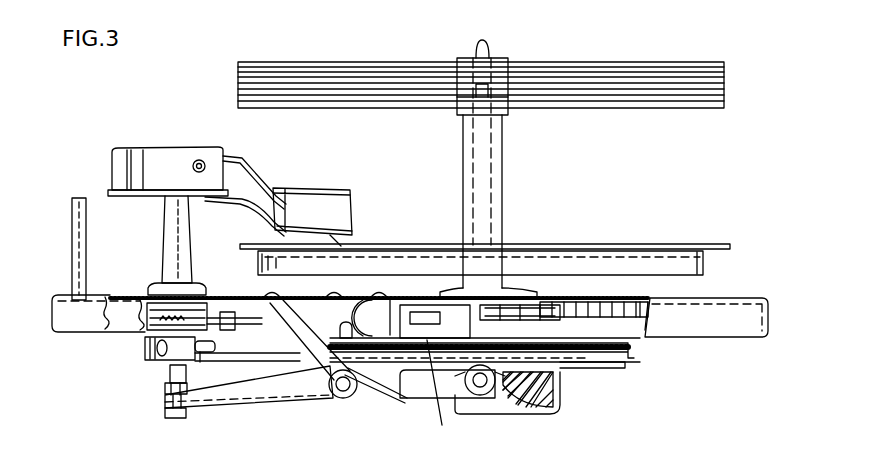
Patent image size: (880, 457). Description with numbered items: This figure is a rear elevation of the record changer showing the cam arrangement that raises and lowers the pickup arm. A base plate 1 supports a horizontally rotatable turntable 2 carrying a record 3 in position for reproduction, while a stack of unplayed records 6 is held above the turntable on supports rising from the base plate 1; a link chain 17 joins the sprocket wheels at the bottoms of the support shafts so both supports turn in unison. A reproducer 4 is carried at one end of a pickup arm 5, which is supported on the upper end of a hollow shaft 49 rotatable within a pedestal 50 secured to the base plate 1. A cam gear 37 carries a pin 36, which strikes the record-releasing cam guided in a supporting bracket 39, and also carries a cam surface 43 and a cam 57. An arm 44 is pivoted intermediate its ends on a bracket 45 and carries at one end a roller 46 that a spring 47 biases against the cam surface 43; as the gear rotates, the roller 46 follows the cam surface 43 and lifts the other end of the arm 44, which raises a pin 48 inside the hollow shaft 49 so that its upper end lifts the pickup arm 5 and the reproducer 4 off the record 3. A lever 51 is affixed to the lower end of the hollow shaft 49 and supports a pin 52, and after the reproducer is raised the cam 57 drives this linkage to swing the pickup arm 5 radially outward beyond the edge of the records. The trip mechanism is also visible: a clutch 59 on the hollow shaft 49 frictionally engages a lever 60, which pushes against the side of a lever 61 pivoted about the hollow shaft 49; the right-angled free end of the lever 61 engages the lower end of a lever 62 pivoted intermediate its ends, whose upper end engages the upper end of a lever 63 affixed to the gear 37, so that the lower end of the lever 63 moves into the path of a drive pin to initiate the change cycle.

The base plate 1 is at (748, 286).
The turntable 2 is at (705, 265).
The record 3 is at (730, 247).
The reproducer 4 is at (323, 191).
The pickup arm 5 is at (258, 182).
The unplayed records 6 is at (667, 74).
The link chain 17 is at (637, 300).
The pin 36 is at (347, 322).
The cam gear 37 is at (454, 310).
The supporting bracket 39 is at (573, 301).
The cam surface 43 is at (556, 396).
The arm 44 is at (295, 405).
The bracket 45 is at (349, 405).
The roller 46 is at (494, 401).
The spring 47 is at (402, 395).
The pin 48 is at (164, 388).
The hollow shaft 49 is at (170, 368).
The pedestal 50 is at (170, 248).
The lever 51 is at (216, 345).
The pin 52 is at (212, 360).
The cam 57 is at (605, 370).
The clutch 59 is at (140, 308).
The lever 60 is at (248, 320).
The lever 61 is at (250, 282).
The lever 62 is at (393, 340).
The lever 63 is at (433, 350).